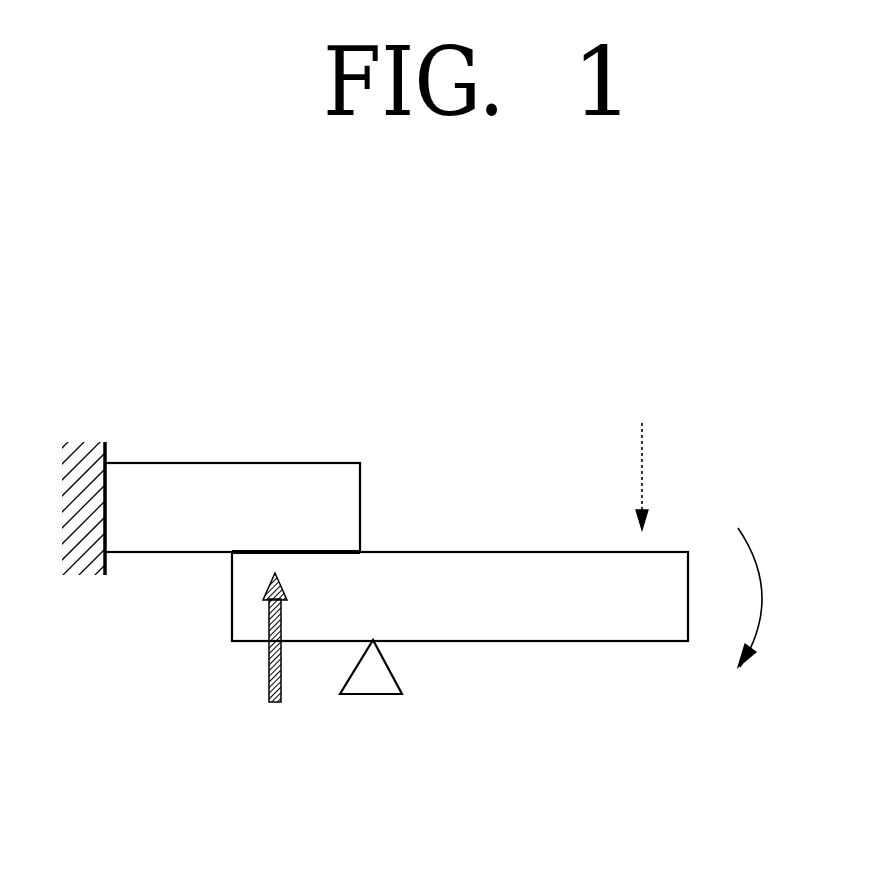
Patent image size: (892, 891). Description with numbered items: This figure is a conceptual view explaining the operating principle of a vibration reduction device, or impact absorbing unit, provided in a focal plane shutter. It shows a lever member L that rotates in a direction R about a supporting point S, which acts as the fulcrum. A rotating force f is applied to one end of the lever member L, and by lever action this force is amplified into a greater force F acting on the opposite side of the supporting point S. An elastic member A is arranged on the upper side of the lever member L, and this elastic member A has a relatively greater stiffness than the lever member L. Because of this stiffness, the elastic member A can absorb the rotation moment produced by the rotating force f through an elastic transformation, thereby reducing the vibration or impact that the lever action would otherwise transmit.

The elastic member A is at (237, 472).
The lever member L is at (568, 631).
The supporting point S is at (377, 694).
The greater force F is at (266, 640).
The rotating force f is at (650, 476).
The rotation direction R is at (763, 597).